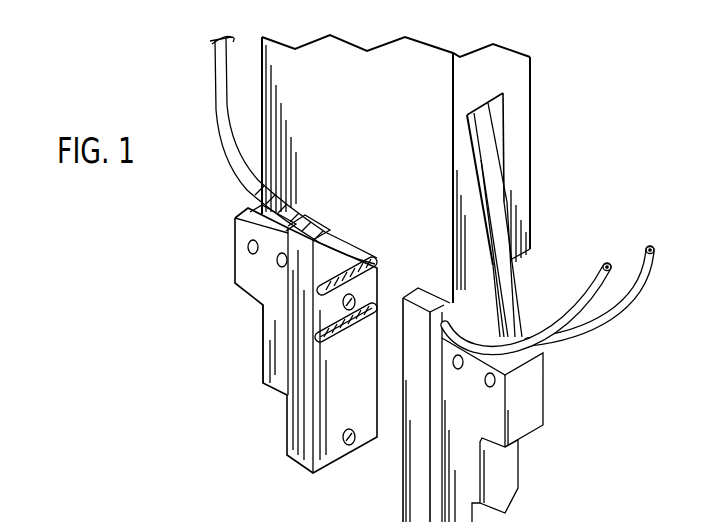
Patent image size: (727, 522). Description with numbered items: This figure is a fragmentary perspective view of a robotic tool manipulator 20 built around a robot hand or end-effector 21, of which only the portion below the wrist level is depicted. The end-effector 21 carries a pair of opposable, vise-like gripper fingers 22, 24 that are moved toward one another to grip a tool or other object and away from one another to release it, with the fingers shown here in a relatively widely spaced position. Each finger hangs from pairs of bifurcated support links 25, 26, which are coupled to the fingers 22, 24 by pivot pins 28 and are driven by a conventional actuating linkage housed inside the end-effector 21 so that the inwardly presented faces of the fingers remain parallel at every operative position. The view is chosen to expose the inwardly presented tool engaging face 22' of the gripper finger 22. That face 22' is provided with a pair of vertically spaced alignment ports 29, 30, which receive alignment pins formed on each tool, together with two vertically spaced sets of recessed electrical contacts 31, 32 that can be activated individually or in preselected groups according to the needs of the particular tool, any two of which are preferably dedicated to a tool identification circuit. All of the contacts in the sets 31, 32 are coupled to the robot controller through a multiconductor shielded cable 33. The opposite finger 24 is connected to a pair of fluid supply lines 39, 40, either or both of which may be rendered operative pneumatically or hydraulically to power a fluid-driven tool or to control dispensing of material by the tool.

The robotic tool manipulator 20 is at (198, 232).
The end-effector 21 is at (522, 102).
The gripper finger 22 is at (269, 398).
The inwardly presented face 22' is at (302, 340).
The gripper finger 24 is at (420, 493).
The bifurcated support link 25 is at (290, 208).
The bifurcated support link 26 is at (508, 283).
The pivot pins 28 is at (280, 259).
The alignment port 29 is at (354, 299).
The alignment port 30 is at (350, 446).
The set of recessed electrical contacts 31 is at (352, 258).
The set of recessed electrical contacts 32 is at (322, 321).
The multiconductor shielded cable 33 is at (218, 100).
The fluid supply line 39 is at (555, 340).
The fluid supply line 40 is at (607, 313).